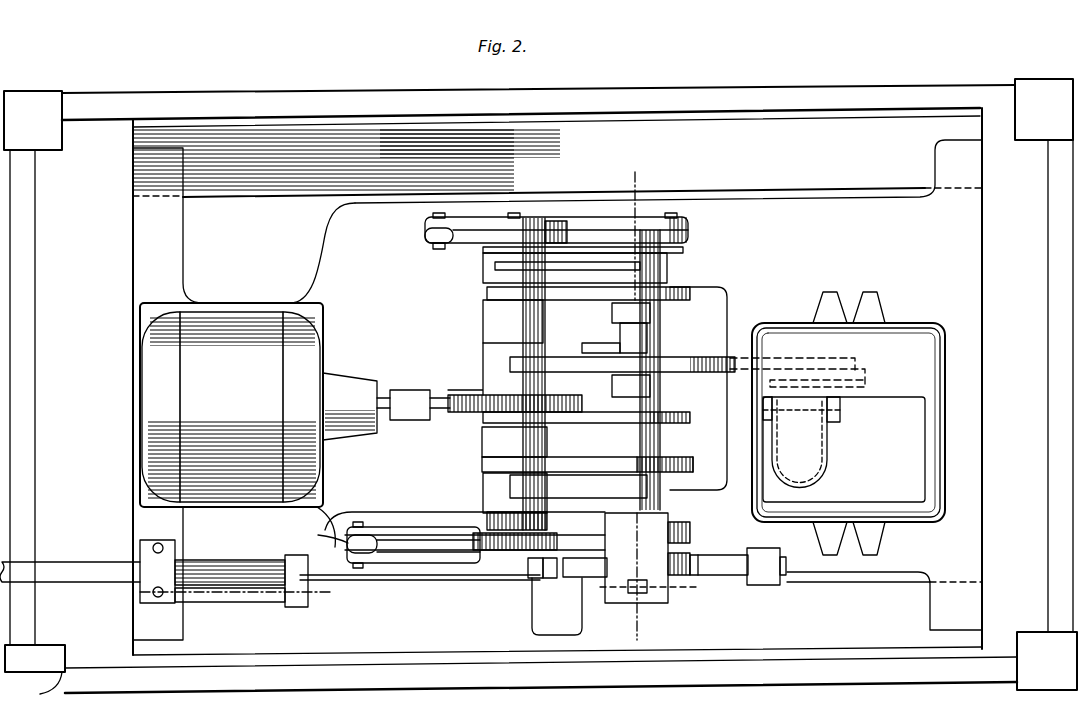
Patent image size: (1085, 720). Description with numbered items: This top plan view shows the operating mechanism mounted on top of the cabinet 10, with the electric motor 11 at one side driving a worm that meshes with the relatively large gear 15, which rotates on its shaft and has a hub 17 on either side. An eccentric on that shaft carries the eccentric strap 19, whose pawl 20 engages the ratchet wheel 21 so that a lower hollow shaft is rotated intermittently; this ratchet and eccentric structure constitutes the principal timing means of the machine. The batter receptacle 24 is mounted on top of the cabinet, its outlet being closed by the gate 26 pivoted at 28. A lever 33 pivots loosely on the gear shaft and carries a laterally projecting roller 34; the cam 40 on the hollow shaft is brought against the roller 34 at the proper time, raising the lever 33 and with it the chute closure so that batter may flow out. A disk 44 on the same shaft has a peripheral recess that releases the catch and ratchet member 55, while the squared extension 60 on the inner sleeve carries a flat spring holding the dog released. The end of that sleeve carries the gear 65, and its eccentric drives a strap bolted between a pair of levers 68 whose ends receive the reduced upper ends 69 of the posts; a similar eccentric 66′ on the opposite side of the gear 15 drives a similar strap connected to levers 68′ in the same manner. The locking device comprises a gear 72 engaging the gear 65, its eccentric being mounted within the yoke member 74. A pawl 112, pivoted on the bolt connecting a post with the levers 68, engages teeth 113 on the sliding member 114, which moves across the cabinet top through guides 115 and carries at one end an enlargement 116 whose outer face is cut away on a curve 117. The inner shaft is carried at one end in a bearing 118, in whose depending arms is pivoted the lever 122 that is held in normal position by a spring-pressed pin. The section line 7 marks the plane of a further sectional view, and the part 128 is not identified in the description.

The section line 7- 7 is at (650, 643).
The cabinet 10 is at (803, 100).
The electric motor 11 is at (265, 405).
The gear 15 is at (470, 393).
The hub 17 is at (490, 385).
The eccentric strap 19 is at (487, 415).
The pawl 20 is at (577, 460).
The ratchet wheel 21 is at (695, 405).
The batter receptacle 24 is at (903, 323).
The gate 26 is at (808, 447).
The pivot 28 is at (840, 412).
The lever 33 is at (553, 365).
The roller 34 is at (652, 340).
The cam 40 is at (592, 343).
The disk 44 is at (680, 457).
The catch and ratchet member 55 is at (555, 458).
The squared extension 60 is at (490, 466).
The gear 65 is at (545, 527).
The eccentric 66′ is at (498, 218).
The levers 68 is at (405, 530).
The levers 68′ is at (688, 226).
The reduced upper ends of posts 69 is at (319, 532).
The gear 72 is at (390, 392).
The yoke member 74 is at (480, 525).
The pawl 112 is at (580, 567).
The teeth 113 is at (700, 578).
The sliding member 114 is at (410, 568).
The guides 115 is at (297, 605).
The enlargement 116 is at (750, 555).
The curve 117 is at (752, 585).
The bearing 118 is at (652, 542).
The lever 122 is at (645, 600).
The shaft 128 is at (250, 597).